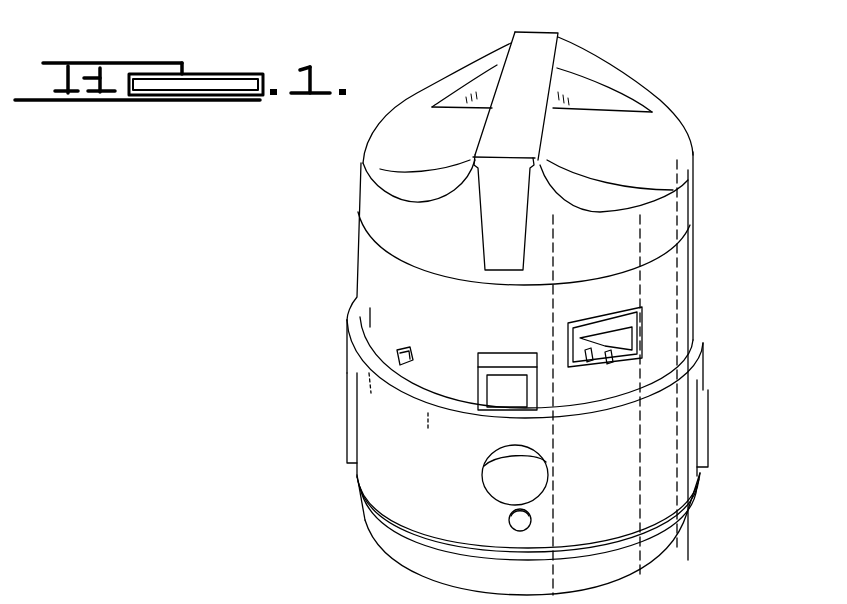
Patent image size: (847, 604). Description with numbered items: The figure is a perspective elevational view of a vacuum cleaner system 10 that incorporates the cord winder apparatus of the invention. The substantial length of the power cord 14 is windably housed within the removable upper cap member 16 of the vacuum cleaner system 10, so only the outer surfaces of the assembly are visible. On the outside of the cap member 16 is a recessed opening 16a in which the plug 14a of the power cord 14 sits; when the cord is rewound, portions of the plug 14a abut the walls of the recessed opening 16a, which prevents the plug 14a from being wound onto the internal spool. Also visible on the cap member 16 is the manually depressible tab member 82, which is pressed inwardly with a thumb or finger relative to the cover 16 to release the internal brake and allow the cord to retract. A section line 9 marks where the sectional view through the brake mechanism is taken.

The vacuum cleaner system 10 is at (643, 67).
The power cord 14 is at (662, 304).
The plug 14a is at (640, 343).
The removable upper cap member 16 is at (362, 252).
The recessed opening 16a is at (570, 348).
The manually depressible tab member 82 is at (398, 348).
The section line 9- 9 is at (370, 317).